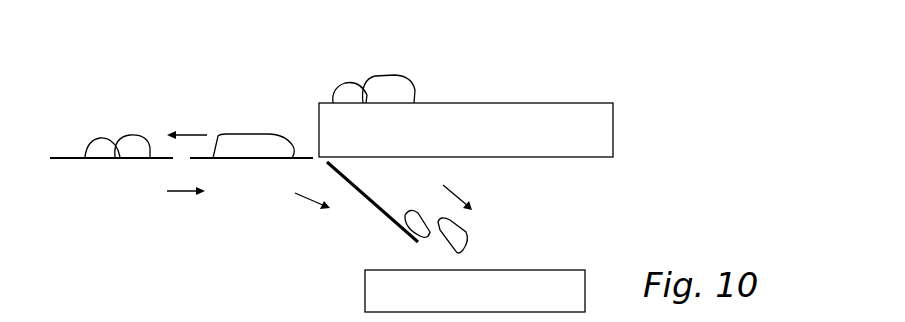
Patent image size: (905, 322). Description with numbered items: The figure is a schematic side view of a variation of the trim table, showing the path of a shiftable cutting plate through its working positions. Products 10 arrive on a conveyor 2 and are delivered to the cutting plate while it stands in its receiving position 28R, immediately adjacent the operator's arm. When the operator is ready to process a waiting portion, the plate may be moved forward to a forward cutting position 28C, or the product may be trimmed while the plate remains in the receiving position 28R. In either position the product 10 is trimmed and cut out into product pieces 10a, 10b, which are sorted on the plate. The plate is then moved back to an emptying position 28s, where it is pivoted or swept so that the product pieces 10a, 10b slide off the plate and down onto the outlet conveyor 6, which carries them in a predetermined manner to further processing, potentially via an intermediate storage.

The product 10 is at (256, 143).
The product piece 10a is at (117, 117).
The product piece 10b is at (153, 98).
The conveyor 2 is at (533, 118).
The outlet conveyor 6 is at (552, 278).
The forward cutting position 28C is at (128, 158).
The receiving position 28R is at (258, 158).
The emptying position 28s is at (373, 207).